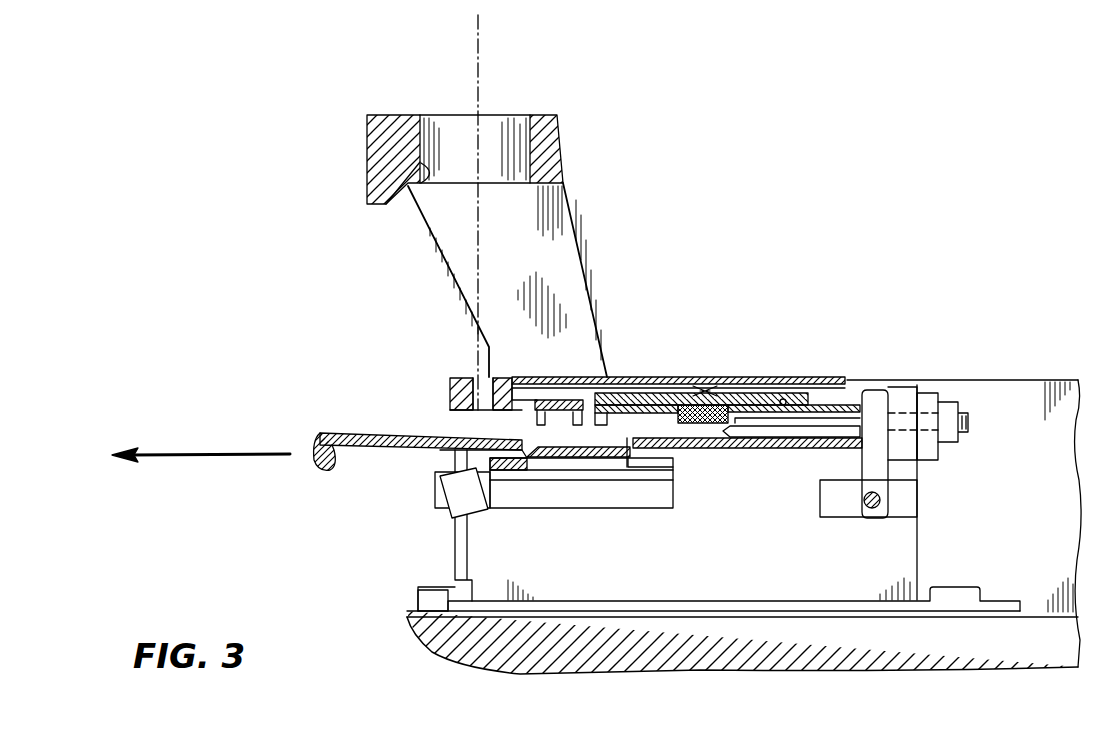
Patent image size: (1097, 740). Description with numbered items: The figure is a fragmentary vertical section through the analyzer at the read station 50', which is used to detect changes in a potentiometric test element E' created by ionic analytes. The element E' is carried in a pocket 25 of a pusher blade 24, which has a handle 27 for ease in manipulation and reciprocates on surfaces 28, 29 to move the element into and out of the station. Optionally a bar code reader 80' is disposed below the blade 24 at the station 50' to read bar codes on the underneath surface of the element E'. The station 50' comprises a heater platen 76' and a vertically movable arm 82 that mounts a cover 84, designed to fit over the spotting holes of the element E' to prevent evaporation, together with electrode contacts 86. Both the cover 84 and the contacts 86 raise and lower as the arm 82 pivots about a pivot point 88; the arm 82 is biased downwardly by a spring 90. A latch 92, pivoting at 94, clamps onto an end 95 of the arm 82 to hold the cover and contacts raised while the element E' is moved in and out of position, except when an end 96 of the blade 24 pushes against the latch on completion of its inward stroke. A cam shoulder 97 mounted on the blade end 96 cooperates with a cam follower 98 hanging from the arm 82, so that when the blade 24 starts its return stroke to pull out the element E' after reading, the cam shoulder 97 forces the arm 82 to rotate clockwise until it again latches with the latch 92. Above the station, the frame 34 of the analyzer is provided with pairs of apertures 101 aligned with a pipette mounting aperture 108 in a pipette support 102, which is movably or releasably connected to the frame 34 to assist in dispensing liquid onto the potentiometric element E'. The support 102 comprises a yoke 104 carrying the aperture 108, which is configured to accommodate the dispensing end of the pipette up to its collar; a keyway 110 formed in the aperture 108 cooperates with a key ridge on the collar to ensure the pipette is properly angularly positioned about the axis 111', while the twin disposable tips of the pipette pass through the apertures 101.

The axis 111' is at (510, 212).
The pipette mounting aperture 108 is at (446, 125).
The yoke 104 is at (497, 225).
The pipette support 102 is at (505, 225).
The keyway 110 is at (425, 172).
The apertures 101 is at (472, 380).
The cover 84 is at (540, 400).
The electrode contacts 86 is at (600, 404).
The frame 34 is at (660, 378).
The spring 90 is at (702, 385).
The vertically movable arm 82 is at (748, 395).
The pivot point 88 is at (786, 400).
The end of arm 95 is at (850, 402).
The handle 27 is at (340, 434).
The pusher blade 24 is at (588, 435).
The surface 28 is at (445, 452).
The read station 50' is at (397, 501).
The bar code reader 80' is at (476, 506).
The heater platen 76' is at (560, 475).
The pocket 25 is at (633, 448).
The potentiometric test element E' is at (619, 430).
The cam shoulder 97 is at (722, 448).
The cam follower 98 is at (722, 434).
The surface 29 is at (800, 450).
The end of blade 96 is at (866, 447).
The latch 92 is at (883, 463).
The pivot 94 is at (873, 508).